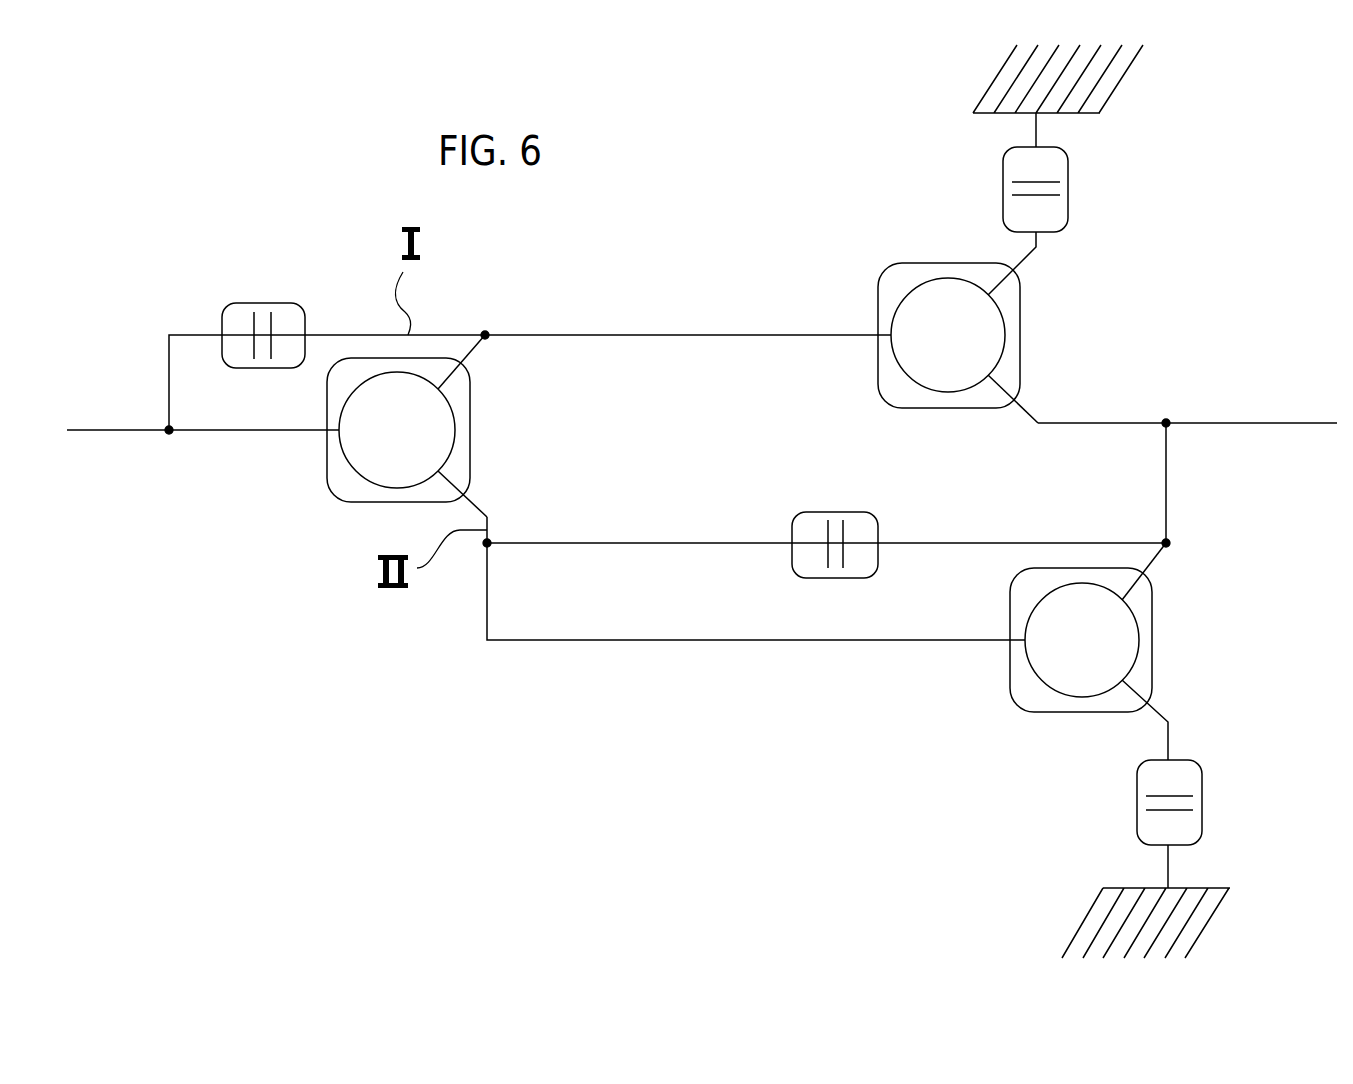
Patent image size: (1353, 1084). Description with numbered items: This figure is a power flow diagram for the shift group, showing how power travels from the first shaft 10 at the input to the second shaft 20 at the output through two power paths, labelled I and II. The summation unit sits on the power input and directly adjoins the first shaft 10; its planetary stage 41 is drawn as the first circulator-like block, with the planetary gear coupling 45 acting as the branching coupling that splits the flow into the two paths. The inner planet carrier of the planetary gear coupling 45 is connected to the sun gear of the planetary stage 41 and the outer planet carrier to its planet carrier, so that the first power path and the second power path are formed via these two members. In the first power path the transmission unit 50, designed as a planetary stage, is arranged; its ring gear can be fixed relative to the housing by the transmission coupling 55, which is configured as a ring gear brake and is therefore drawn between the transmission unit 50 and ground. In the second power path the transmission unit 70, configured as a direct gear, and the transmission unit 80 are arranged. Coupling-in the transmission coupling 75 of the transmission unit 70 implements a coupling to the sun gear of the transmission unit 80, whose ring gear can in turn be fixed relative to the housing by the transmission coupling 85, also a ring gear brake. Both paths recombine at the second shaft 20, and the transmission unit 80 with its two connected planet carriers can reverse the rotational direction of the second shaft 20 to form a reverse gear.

The first shaft 10 is at (104, 430).
The second shaft 20 is at (1288, 423).
The planetary stage 41 is at (343, 517).
The planetary gear coupling 45 is at (248, 303).
The transmission unit 50 is at (908, 238).
The transmission coupling 55 is at (1068, 197).
The transmission unit 70 is at (787, 518).
The transmission coupling 75 is at (822, 512).
The transmission unit 80 is at (1160, 642).
The transmission coupling 85 is at (1202, 792).